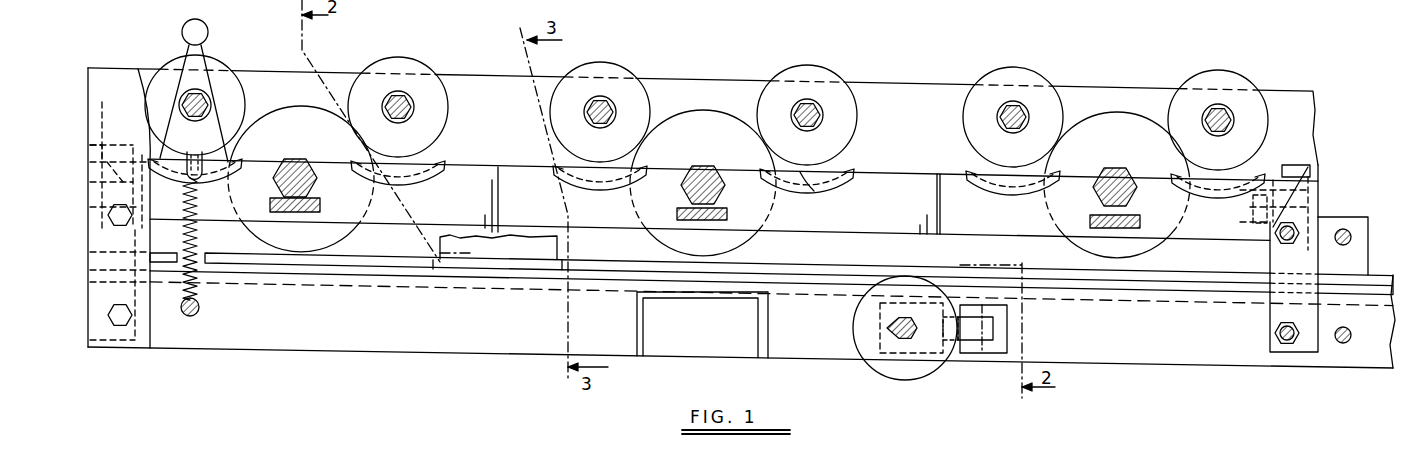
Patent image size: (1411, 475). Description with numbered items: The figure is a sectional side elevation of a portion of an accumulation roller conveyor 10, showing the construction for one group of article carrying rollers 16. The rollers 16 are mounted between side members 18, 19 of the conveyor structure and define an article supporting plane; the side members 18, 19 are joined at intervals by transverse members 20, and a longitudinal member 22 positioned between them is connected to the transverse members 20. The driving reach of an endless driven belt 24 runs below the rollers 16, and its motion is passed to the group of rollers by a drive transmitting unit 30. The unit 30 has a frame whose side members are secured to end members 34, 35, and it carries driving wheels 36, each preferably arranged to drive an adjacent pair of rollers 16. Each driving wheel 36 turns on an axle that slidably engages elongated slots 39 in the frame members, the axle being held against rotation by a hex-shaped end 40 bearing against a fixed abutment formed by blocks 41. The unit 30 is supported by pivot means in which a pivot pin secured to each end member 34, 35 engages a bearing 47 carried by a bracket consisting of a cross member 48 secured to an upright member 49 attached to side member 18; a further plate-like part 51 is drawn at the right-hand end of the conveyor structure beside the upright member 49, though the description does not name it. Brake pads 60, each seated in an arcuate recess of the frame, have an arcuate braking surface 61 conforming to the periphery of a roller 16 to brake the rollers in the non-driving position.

The accumulation roller conveyor 10 is at (1280, 82).
The article carrying rollers 16 is at (627, 72).
The side member 18 is at (150, 322).
The side member 19 is at (333, 352).
The transverse members 20 is at (647, 337).
The longitudinal member 22 is at (1377, 355).
The endless driven belt 24 is at (887, 265).
The drive transmitting unit 30 is at (868, 163).
The end member 34 is at (176, 239).
The end member 35 is at (1268, 222).
The driving wheels 36 is at (283, 103).
The elongated slots 39 is at (320, 195).
The hex-shaped end 40 is at (1095, 187).
The blocks 41 is at (1090, 222).
The bearing 47 is at (1307, 163).
The cross member 48 is at (1320, 182).
The upright member 49 is at (1268, 313).
The end plate 51 is at (1370, 255).
The brake pads 60 is at (843, 177).
The arcuate braking surface 61 is at (807, 173).